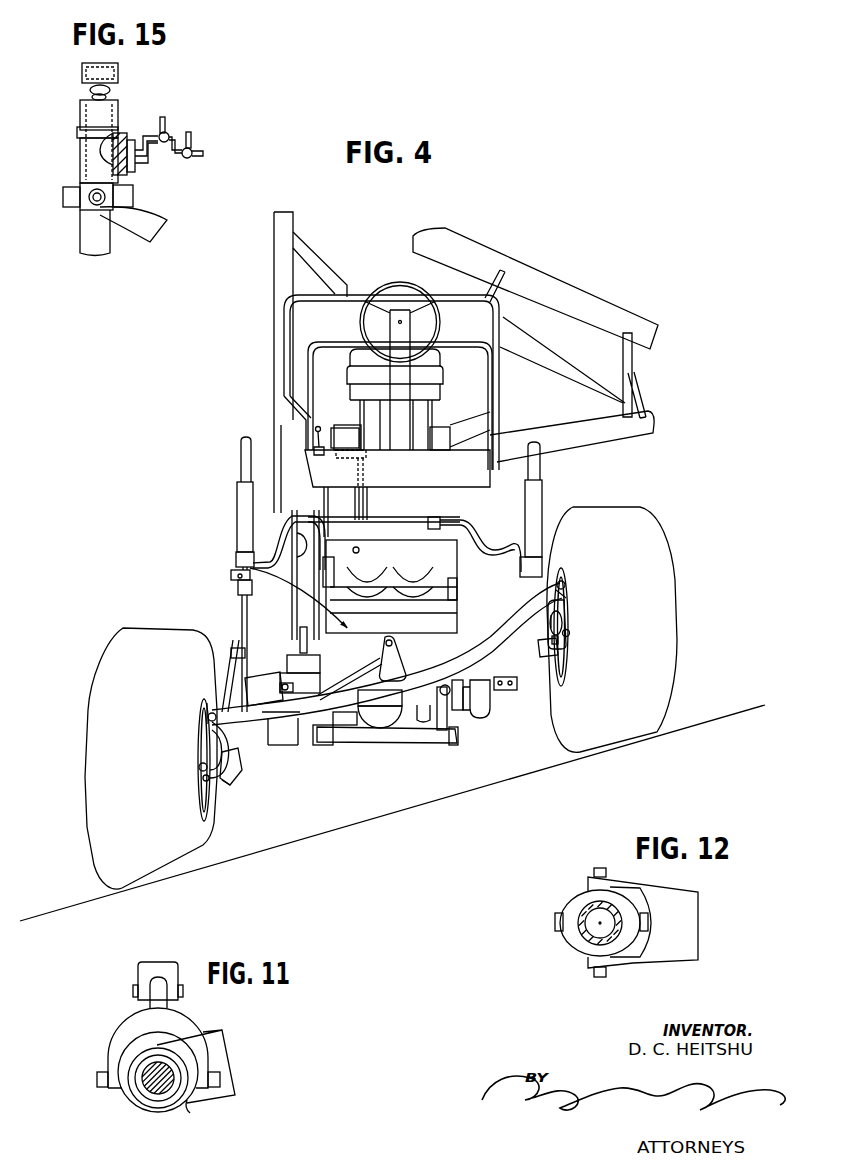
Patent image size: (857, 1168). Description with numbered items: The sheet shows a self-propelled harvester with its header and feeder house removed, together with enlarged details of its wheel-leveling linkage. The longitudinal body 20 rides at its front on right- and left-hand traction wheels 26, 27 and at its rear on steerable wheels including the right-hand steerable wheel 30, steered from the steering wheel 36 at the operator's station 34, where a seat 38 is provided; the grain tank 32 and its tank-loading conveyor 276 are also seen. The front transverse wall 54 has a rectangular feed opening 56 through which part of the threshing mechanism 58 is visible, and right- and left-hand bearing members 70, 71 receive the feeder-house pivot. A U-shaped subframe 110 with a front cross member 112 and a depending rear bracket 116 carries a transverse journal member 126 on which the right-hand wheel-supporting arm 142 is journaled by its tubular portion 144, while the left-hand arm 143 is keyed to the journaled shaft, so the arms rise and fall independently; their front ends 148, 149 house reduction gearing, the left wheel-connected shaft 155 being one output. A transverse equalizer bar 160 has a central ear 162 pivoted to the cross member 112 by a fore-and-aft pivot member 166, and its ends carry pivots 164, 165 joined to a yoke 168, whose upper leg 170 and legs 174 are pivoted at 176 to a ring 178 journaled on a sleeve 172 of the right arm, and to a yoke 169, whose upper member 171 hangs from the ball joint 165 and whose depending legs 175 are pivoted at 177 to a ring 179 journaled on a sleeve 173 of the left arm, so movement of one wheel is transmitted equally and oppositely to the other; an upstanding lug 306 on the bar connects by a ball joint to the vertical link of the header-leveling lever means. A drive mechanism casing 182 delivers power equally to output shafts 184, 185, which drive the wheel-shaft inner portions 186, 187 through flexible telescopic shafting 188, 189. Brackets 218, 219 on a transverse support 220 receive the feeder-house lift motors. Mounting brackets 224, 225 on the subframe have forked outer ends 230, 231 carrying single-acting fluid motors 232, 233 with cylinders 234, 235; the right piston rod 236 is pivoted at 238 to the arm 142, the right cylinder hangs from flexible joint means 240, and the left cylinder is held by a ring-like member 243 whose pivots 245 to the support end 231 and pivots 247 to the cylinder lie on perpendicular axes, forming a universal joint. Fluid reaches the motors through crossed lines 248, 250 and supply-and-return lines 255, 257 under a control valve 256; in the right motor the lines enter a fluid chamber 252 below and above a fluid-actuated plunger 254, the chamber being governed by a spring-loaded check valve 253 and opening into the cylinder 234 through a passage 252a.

In FIG. 4, the longitudinal body 20 is at (380, 512).
In FIG. 4, the right-hand traction wheel 26 is at (100, 871).
In FIG. 4, the left-hand traction wheel 27 is at (663, 708).
In FIG. 4, the right-hand steerable wheel 30 is at (294, 746).
In FIG. 4, the grain tank 32 is at (352, 308).
In FIG. 4, the operator's station 34 is at (463, 480).
In FIG. 4, the steering wheel 36 is at (410, 283).
In FIG. 4, the seat 38 is at (432, 390).
In FIG. 4, the transverse wall 54 is at (355, 548).
In FIG. 4, the rectangular feed opening 56 is at (367, 568).
In FIG. 4, the threshing mechanism 58 is at (403, 580).
In FIG. 4, the right-hand bearing member 70 is at (328, 570).
In FIG. 4, the left-hand bearing member 71 is at (457, 593).
In FIG. 4, the subframe 110 is at (287, 650).
In FIG. 4, the transverse cross member 112 is at (400, 663).
In FIG. 4, the depending support bracket 116 is at (293, 672).
In FIG. 4, the transverse journal member 126 is at (247, 673).
In FIG. 4, the right-hand wheel-supporting arm 142 is at (248, 690).
In FIG. 4, the left-hand wheel-supporting arm 143 is at (500, 695).
In FIG. 11, the left-hand wheel-supporting arm 143 is at (224, 1043).
In FIG. 4, the transverse tubular portion 144 is at (236, 656).
In FIG. 4, the front end portion 148 is at (214, 785).
In FIG. 4, the front end 149 is at (566, 620).
In FIG. 11, the front end 149 is at (187, 1100).
In FIG. 11, the left-hand wheel-connected shaft 155 is at (155, 1095).
In FIG. 4, the transverse equalizer bar 160 is at (353, 717).
In FIG. 11, the transverse equalizer bar 160 is at (172, 958).
In FIG. 4, the mounting ear 162 is at (380, 674).
In FIG. 4, the right-hand longitudinal pivot 164 is at (208, 716).
In FIG. 4, the left-hand pivot 165 is at (565, 584).
In FIG. 11, the left-hand pivot 165 is at (133, 990).
In FIG. 4, the fore-and-aft pivot member 166 is at (407, 656).
In FIG. 4, the right-hand yoke 168 is at (205, 750).
In FIG. 4, the left-hand yoke 169 is at (567, 607).
In FIG. 11, the left-hand yoke 169 is at (137, 1022).
In FIG. 4, the upper leg 170 is at (213, 725).
In FIG. 4, the upper member 171 is at (567, 590).
In FIG. 11, the upper member 171 is at (168, 1003).
In FIG. 4, the cylindrical sleeve 172 is at (208, 785).
In FIG. 4, the cylindrical sleeve 173 is at (551, 641).
In FIG. 11, the cylindrical sleeve 173 is at (142, 1093).
In FIG. 4, the yoke legs 174 is at (200, 758).
In FIG. 4, the depending legs 175 is at (569, 614).
In FIG. 11, the depending legs 175 is at (115, 1050).
In FIG. 4, the pivot 176 is at (199, 768).
In FIG. 4, the pivotal connections 177 is at (569, 639).
In FIG. 11, the pivotal connections 177 is at (97, 1078).
In FIG. 4, the ring 178 is at (205, 780).
In FIG. 4, the ring 179 is at (572, 643).
In FIG. 11, the ring 179 is at (163, 1108).
In FIG. 4, the drive mechanism casing 182 is at (383, 713).
In FIG. 4, the right-hand output shaft 184 is at (337, 745).
In FIG. 4, the left-hand output shaft 185 is at (433, 745).
In FIG. 4, the inner portion of right wheel-driving shaft 186 is at (221, 768).
In FIG. 4, the inner portion of left wheel-driving shaft 187 is at (571, 632).
In FIG. 4, the flexible telescopic shafting 188 is at (266, 712).
In FIG. 4, the flexible telescopic shaft 189 is at (512, 678).
In FIG. 4, the right-hand bracket 218 is at (326, 745).
In FIG. 4, the left-hand bracket 219 is at (453, 744).
In FIG. 4, the transverse support 220 is at (400, 738).
In FIG. 15, the right-hand mounting bracket 224 is at (150, 243).
In FIG. 4, the right-hand mounting bracket 224 is at (268, 593).
In FIG. 4, the left-hand mounting bracket 225 is at (505, 565).
In FIG. 12, the left-hand mounting bracket 225 is at (699, 920).
In FIG. 4, the bifurcated outer end 230 is at (230, 578).
In FIG. 4, the outer end 231 is at (541, 563).
In FIG. 12, the outer end 231 is at (633, 963).
In FIG. 15, the right-hand fluid motor 232 is at (78, 63).
In FIG. 4, the right-hand fluid motor 232 is at (236, 518).
In FIG. 4, the left-hand fluid motor 233 is at (543, 497).
In FIG. 15, the cylinder 234 is at (83, 78).
In FIG. 4, the cylinder 234 is at (247, 473).
In FIG. 4, the cylinder 235 is at (541, 470).
In FIG. 12, the cylinder 235 is at (590, 935).
In FIG. 15, the piston rod 236 is at (87, 247).
In FIG. 4, the piston rod 236 is at (255, 612).
In FIG. 4, the pivotal connection 238 is at (261, 725).
In FIG. 15, the flexible joint means 240 is at (66, 181).
In FIG. 12, the ring-like member 243 is at (577, 898).
In FIG. 12, the coaxial pivotal connections 245 is at (602, 868).
In FIG. 12, the coaxial pivotal connections 247 is at (555, 920).
In FIG. 15, the cross line 248 is at (167, 134).
In FIG. 4, the cross line 248 is at (432, 518).
In FIG. 15, the cross line 250 is at (204, 157).
In FIG. 4, the cross line 250 is at (427, 528).
In FIG. 15, the fluid chamber 252 is at (134, 172).
In FIG. 15, the passage 252a is at (122, 133).
In FIG. 15, the spring-loaded check valve 253 is at (128, 134).
In FIG. 15, the fluid-actuated plunger 254 is at (136, 161).
In FIG. 15, the supply and return line 255 is at (163, 116).
In FIG. 4, the supply and return line 255 is at (352, 490).
In FIG. 4, the control valve 256 is at (338, 442).
In FIG. 15, the supply and return line 257 is at (192, 134).
In FIG. 4, the supply and return line 257 is at (367, 505).
In FIG. 4, the tank-loading conveyor 276 is at (273, 343).
In FIG. 4, the upstanding lug 306 is at (283, 687).